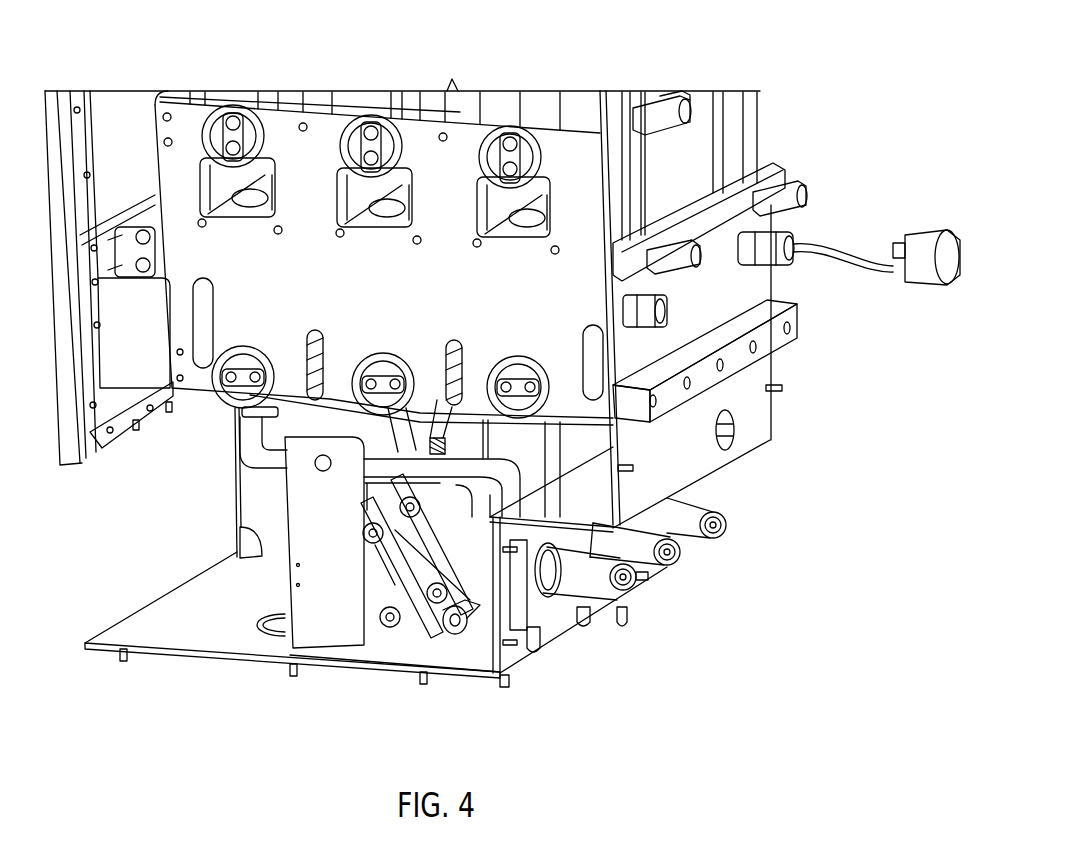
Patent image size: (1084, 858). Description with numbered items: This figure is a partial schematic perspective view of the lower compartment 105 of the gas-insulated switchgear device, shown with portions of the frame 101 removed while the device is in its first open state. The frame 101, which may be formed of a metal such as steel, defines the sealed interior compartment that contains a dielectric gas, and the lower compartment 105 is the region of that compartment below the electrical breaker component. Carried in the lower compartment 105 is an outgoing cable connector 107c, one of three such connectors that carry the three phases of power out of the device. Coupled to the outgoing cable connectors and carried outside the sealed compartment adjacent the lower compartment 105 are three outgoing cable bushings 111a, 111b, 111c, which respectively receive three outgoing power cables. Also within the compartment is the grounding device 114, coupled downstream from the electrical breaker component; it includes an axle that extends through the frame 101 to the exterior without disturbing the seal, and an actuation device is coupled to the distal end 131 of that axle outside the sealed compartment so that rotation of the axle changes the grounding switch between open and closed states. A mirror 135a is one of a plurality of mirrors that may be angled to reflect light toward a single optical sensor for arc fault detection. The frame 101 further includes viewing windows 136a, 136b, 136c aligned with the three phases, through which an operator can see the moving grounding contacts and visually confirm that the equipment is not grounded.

The frame 101 is at (720, 128).
The lower compartment 105 is at (198, 613).
The outgoing cable connector 107c is at (443, 640).
The outgoing cable bushing 111a is at (733, 540).
The outgoing cable bushing 111b is at (667, 573).
The outgoing cable bushing 111c is at (597, 580).
The grounding device 114 is at (403, 648).
The distal end 131 is at (733, 443).
The mirror 135a is at (238, 550).
The viewing window 136a is at (513, 650).
The viewing window 136b is at (587, 613).
The viewing window 136c is at (647, 580).